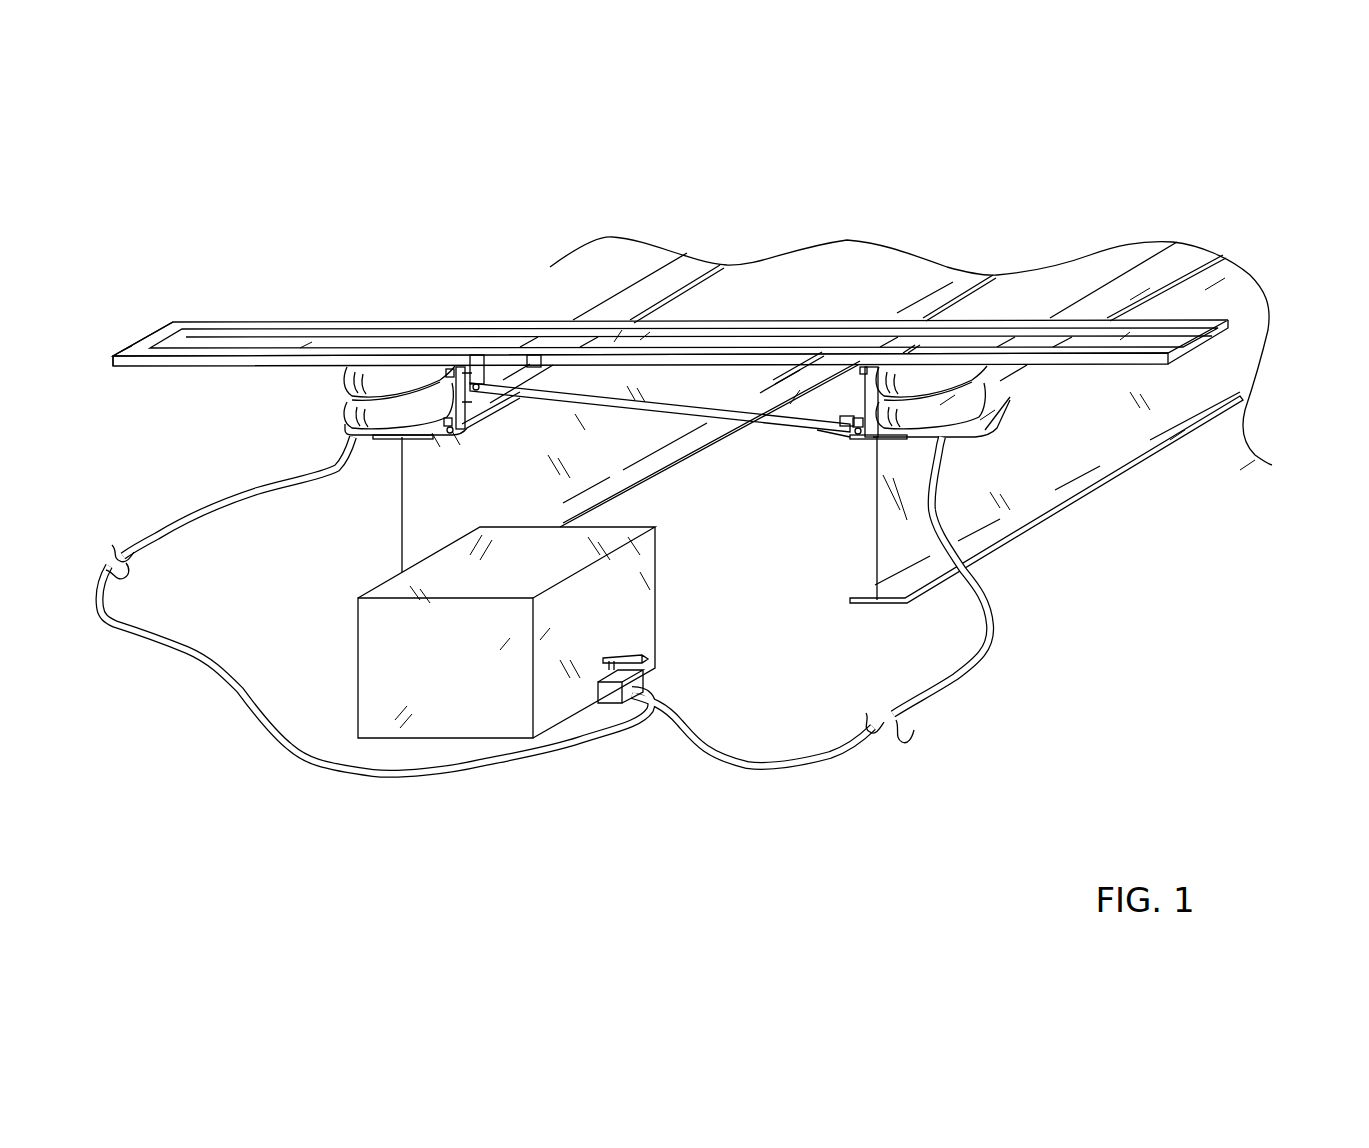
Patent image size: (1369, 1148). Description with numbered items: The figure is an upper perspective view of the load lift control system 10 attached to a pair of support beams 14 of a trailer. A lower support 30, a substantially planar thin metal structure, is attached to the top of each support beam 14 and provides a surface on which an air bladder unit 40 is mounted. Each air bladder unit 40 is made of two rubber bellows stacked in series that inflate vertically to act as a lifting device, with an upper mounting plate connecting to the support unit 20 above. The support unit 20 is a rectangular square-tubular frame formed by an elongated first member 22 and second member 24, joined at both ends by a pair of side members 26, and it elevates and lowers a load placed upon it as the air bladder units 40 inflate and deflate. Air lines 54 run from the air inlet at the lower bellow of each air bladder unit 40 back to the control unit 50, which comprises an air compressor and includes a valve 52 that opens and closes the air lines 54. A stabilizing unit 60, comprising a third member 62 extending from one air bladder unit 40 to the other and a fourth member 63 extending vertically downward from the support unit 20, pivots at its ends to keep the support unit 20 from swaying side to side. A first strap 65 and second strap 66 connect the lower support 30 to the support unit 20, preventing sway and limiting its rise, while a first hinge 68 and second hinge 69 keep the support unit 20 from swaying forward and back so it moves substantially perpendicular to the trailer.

The load lift control system 10 is at (275, 190).
The support beam 14 is at (400, 545).
The support unit 20 is at (688, 330).
The first member 22 is at (172, 363).
The second member 24 is at (240, 323).
The side members 26 is at (150, 338).
The lower support 30 is at (367, 440).
The air bladder unit 40 is at (358, 408).
The control unit 50 is at (655, 618).
The valve 52 is at (657, 647).
The air line 54 is at (245, 715).
The stabilizing unit 60 is at (735, 386).
The third member 62 is at (688, 407).
The fourth member 63 is at (483, 360).
The first strap 65 is at (470, 427).
The second strap 66 is at (870, 438).
The first hinge 68 is at (533, 360).
The second hinge 69 is at (903, 353).